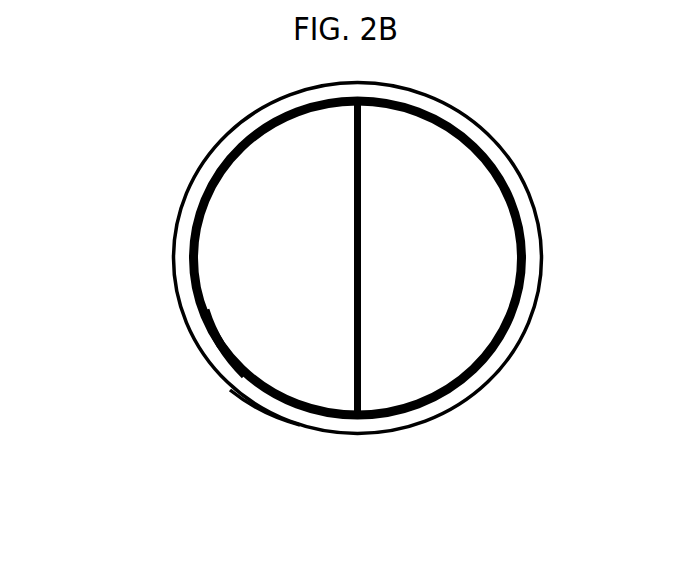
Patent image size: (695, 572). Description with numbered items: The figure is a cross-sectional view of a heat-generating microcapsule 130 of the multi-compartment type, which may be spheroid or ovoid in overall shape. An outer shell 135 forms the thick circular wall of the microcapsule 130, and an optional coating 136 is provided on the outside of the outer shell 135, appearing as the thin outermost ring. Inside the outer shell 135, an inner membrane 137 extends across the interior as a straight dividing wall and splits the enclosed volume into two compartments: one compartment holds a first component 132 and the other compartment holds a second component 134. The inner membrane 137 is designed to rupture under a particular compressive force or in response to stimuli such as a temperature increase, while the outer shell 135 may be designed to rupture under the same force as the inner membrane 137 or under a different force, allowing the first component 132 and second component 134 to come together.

The microcapsule 130 is at (137, 109).
The first component 132 is at (412, 238).
The second component 134 is at (260, 353).
The outer shell 135 is at (220, 343).
The coating 136 is at (270, 407).
The inner membrane 137 is at (352, 270).